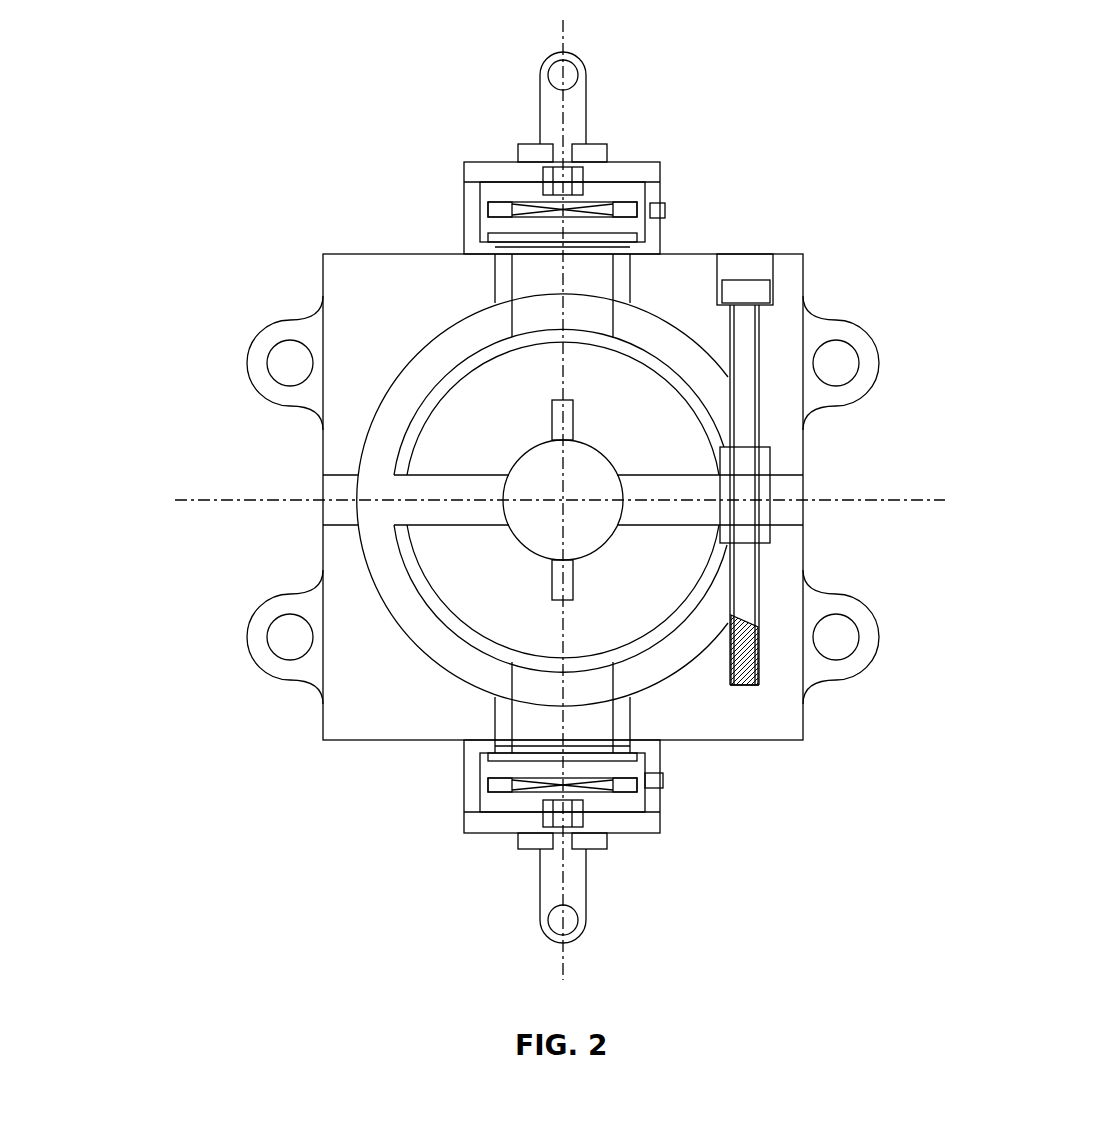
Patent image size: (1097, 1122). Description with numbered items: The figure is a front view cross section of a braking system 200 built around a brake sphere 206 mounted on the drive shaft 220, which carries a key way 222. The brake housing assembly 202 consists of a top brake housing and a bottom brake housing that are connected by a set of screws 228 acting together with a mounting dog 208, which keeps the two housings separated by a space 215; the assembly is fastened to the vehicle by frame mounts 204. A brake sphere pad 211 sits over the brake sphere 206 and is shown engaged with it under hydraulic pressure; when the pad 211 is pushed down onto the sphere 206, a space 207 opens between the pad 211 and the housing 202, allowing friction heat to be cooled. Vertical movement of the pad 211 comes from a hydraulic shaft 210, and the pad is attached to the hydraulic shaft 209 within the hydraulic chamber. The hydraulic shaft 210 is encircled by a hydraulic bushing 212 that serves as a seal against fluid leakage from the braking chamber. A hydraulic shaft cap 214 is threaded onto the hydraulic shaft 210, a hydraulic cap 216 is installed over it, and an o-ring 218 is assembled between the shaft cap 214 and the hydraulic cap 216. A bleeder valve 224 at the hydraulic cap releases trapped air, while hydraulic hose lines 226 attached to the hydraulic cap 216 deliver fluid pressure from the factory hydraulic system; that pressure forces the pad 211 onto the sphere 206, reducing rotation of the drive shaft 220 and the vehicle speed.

The braking system 200 is at (752, 143).
The brake housing assembly 202 is at (357, 262).
The frame mounts 204 is at (277, 634).
The brake sphere 206 is at (468, 418).
The space 207 is at (382, 411).
The mounting dog 208 is at (765, 487).
The hydraulic shaft 209 is at (523, 313).
The hydraulic shaft 210 is at (521, 230).
The brake sphere pad 211 is at (406, 446).
The hydraulic bushing 212 is at (492, 754).
The hydraulic shaft cap 214 is at (497, 209).
The space 215 is at (798, 506).
The hydraulic cap 216 is at (482, 170).
The o-ring 218 is at (466, 815).
The drive shaft 220 is at (549, 543).
The key way 222 is at (558, 420).
The bleeder valve 224 is at (661, 782).
The hydraulic hose lines 226 is at (579, 873).
The screws 228 is at (751, 268).